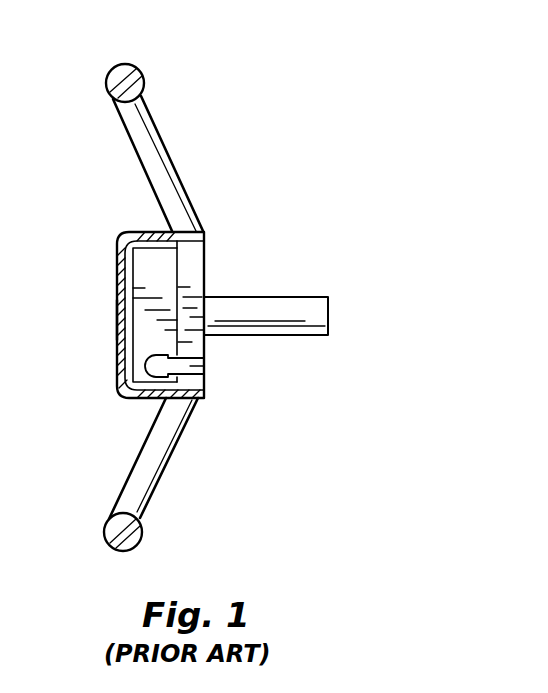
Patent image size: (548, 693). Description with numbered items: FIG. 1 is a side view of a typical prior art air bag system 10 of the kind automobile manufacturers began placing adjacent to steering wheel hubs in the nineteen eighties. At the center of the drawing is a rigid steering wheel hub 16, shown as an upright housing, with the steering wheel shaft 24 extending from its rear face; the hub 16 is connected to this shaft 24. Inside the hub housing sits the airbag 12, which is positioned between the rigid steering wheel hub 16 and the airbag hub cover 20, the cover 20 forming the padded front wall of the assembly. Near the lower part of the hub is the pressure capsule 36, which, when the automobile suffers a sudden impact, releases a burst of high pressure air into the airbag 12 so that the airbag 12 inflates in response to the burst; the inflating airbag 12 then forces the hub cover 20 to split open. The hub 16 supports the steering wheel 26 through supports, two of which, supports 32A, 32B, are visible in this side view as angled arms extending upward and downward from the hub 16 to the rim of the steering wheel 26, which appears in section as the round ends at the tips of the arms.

The air bag system 10 is at (292, 171).
The airbag 12 is at (151, 263).
The steering wheel hub 16 is at (198, 275).
The airbag hub cover 20 is at (118, 322).
The steering wheel shaft 24 is at (290, 297).
The steering wheel 26 is at (141, 71).
The support 32A is at (158, 163).
The support 32B is at (152, 475).
The pressure capsule 36 is at (198, 365).